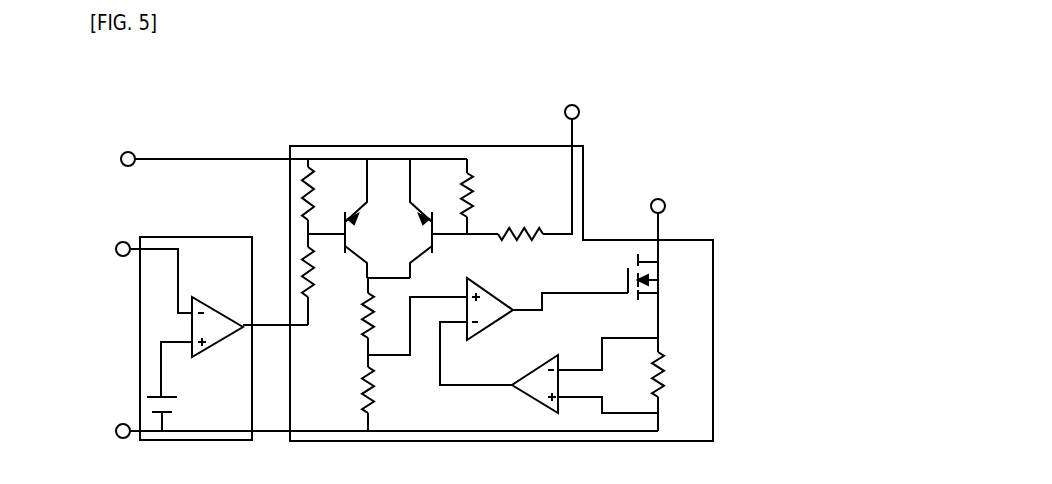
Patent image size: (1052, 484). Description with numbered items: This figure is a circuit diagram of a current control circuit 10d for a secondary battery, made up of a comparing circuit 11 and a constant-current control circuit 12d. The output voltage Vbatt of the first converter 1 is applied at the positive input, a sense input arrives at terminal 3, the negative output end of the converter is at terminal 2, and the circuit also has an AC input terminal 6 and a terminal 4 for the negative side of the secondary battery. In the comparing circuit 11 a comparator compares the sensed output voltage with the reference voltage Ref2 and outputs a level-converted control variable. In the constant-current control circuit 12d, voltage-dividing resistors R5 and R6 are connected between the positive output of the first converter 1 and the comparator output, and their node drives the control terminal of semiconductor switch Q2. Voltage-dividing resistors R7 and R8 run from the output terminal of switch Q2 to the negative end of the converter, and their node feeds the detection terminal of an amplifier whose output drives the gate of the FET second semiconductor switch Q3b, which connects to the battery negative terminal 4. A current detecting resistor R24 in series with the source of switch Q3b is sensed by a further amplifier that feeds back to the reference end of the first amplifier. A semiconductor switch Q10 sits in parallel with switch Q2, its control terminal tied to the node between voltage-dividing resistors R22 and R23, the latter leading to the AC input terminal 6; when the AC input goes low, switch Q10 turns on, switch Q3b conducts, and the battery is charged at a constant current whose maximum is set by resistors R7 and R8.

The first converter 1 is at (250, 158).
The output terminal (Vo-) 2 is at (350, 438).
The sense terminal (SENS) 3 is at (112, 264).
The battery negative terminal (BATT-) 4 is at (657, 198).
The AC input terminal (AC IN) 6 is at (571, 140).
The current control circuit 10d is at (217, 206).
The comparing circuit 11 is at (224, 338).
The constant-current control circuit 12d is at (707, 428).
The voltage-dividing resistor R5 is at (323, 196).
The voltage-dividing resistor R6 is at (322, 279).
The voltage-dividing resistor R7 is at (414, 316).
The voltage-dividing resistor R8 is at (350, 393).
The voltage-dividing resistor R22 is at (490, 195).
The voltage-dividing resistor R23 is at (527, 218).
The current detecting resistor R24 is at (678, 377).
The semiconductor switch Q2 is at (366, 218).
The semiconductor switch Q10 is at (432, 218).
The second semiconductor switch Q3b is at (667, 303).
The reference voltage Ref2 is at (187, 412).